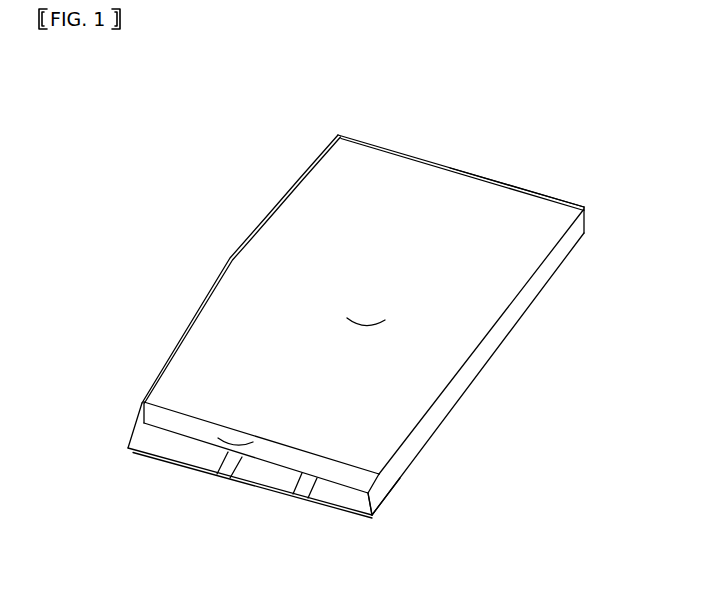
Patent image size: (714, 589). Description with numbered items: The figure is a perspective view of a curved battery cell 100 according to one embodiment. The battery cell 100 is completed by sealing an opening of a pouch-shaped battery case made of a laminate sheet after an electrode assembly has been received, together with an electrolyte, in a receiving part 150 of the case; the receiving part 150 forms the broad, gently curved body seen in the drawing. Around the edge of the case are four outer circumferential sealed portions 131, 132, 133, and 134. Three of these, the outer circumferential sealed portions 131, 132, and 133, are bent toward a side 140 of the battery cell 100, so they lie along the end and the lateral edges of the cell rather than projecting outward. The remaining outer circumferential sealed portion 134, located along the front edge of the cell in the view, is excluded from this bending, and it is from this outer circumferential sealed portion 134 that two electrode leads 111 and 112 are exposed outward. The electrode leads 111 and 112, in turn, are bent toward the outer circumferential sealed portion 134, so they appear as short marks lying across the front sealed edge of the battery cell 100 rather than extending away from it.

The battery cell 100 is at (183, 306).
The electrode lead 111 is at (226, 475).
The electrode lead 112 is at (302, 494).
The outer circumferential sealed portion 131 is at (380, 494).
The outer circumferential sealed portion 132 is at (144, 424).
The outer circumferential sealed portion 133 is at (527, 192).
The outer circumferential sealed portion 134 is at (162, 446).
The side of the battery cell 140 is at (233, 442).
The receiving part 150 is at (368, 315).